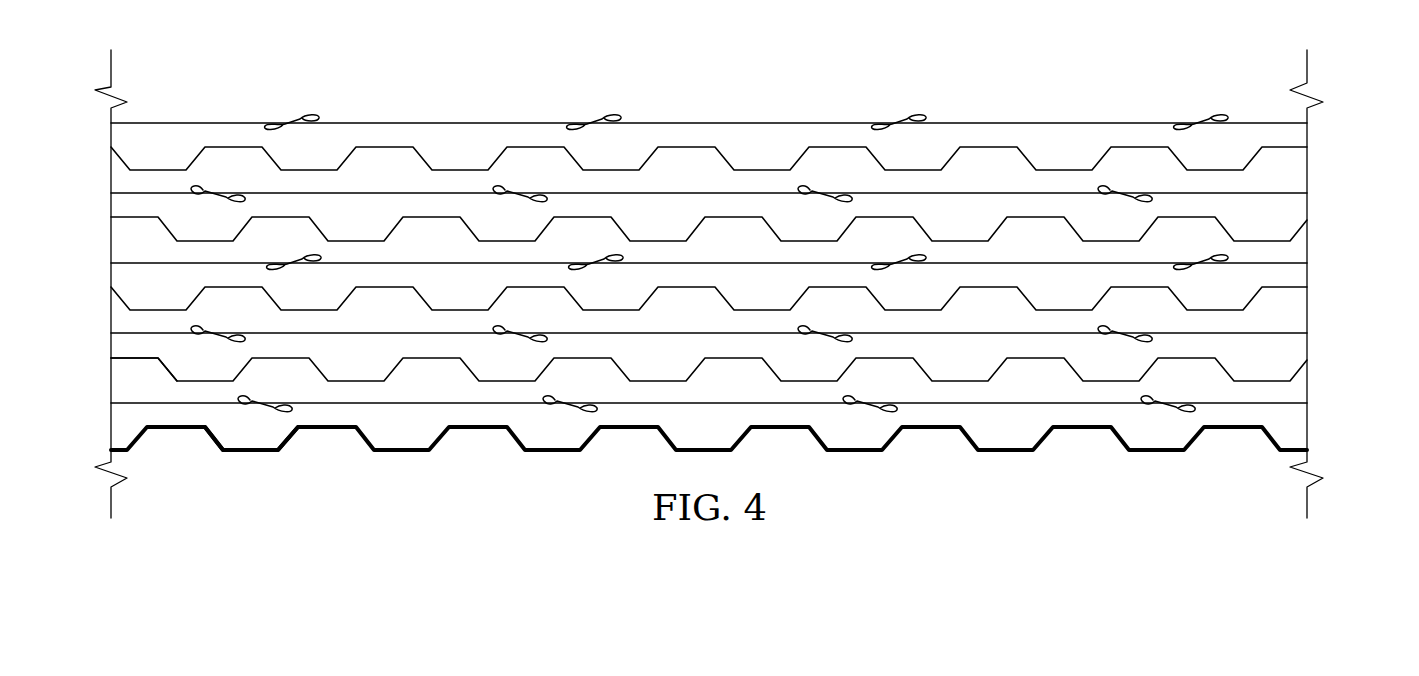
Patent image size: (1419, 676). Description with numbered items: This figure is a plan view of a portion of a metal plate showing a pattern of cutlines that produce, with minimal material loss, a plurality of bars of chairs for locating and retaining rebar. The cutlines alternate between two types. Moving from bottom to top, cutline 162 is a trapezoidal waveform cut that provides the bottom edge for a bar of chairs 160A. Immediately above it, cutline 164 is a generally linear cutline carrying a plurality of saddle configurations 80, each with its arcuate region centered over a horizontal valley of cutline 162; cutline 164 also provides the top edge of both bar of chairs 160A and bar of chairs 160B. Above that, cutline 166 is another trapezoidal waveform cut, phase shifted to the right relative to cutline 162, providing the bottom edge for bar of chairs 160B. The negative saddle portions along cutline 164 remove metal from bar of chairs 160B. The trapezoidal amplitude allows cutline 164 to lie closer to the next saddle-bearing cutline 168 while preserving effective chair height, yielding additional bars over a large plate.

The saddle configuration 80 is at (270, 407).
The bar of chairs 160A is at (1297, 428).
The bar of chairs 160B is at (1297, 387).
The cutline 162 is at (275, 452).
The cutline 164 is at (122, 403).
The cutline 166 is at (122, 357).
The cutline 168 is at (1285, 333).